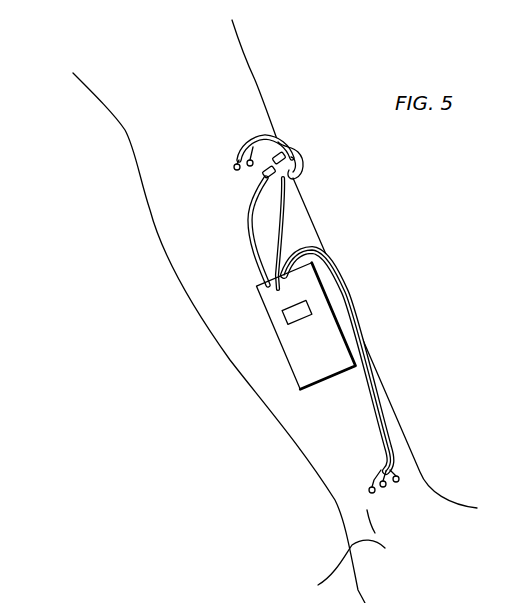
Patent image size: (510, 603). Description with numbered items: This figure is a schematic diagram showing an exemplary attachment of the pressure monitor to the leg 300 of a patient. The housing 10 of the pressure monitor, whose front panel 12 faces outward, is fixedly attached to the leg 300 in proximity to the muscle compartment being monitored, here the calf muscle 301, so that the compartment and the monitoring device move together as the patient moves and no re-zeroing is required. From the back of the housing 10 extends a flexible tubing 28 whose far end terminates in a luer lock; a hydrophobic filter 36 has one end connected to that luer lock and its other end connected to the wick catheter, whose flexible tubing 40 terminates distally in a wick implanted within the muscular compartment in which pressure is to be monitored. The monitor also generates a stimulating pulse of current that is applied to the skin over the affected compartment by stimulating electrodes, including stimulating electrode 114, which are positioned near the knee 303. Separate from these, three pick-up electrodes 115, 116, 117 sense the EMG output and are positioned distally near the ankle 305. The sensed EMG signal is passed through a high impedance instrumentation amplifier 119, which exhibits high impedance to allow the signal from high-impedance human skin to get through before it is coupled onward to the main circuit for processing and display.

The pressure monitor housing 10 is at (334, 326).
The front panel 12 is at (327, 325).
The flexible tubing 28 is at (252, 247).
The hydrophobic filter 36 is at (286, 180).
The flexible tubing of wick catheter 40 is at (303, 162).
The stimulating electrode 114 is at (249, 167).
The pick-up electrode 115 is at (369, 490).
The pick-up electrode 116 is at (392, 489).
The pick-up electrode 117 is at (399, 479).
The high impedance instrumentation amplifier 119 is at (233, 166).
The leg 300 is at (312, 417).
The calf muscle 301 is at (250, 355).
The knee 303 is at (254, 104).
The ankle 305 is at (331, 556).